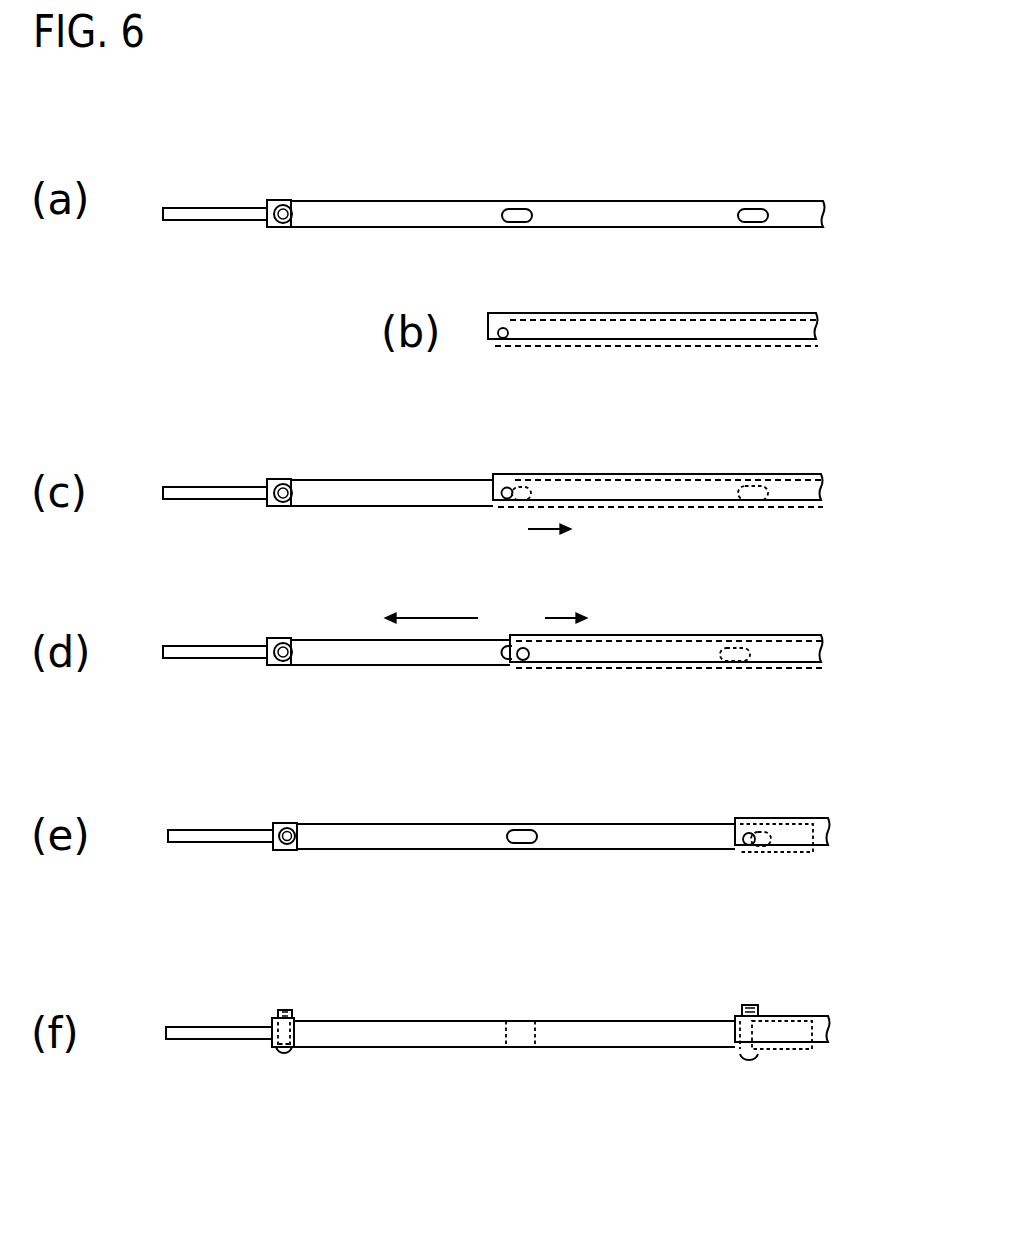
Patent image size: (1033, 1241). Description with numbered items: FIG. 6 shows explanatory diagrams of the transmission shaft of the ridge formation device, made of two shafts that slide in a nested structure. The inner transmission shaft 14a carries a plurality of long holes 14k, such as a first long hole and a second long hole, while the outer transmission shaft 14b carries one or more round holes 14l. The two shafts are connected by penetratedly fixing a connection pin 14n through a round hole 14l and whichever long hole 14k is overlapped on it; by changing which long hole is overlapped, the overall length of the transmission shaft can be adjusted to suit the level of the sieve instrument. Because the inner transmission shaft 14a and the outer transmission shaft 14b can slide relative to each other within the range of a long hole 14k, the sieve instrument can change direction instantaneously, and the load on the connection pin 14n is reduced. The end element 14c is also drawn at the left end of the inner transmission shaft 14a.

The inner transmission shaft 14a is at (405, 201).
The outer transmission shaft 14b is at (628, 312).
The pin bolt 14c is at (283, 200).
The long hole 14k is at (517, 209).
The round hole 14l is at (504, 328).
The connection pin 14n is at (748, 1061).